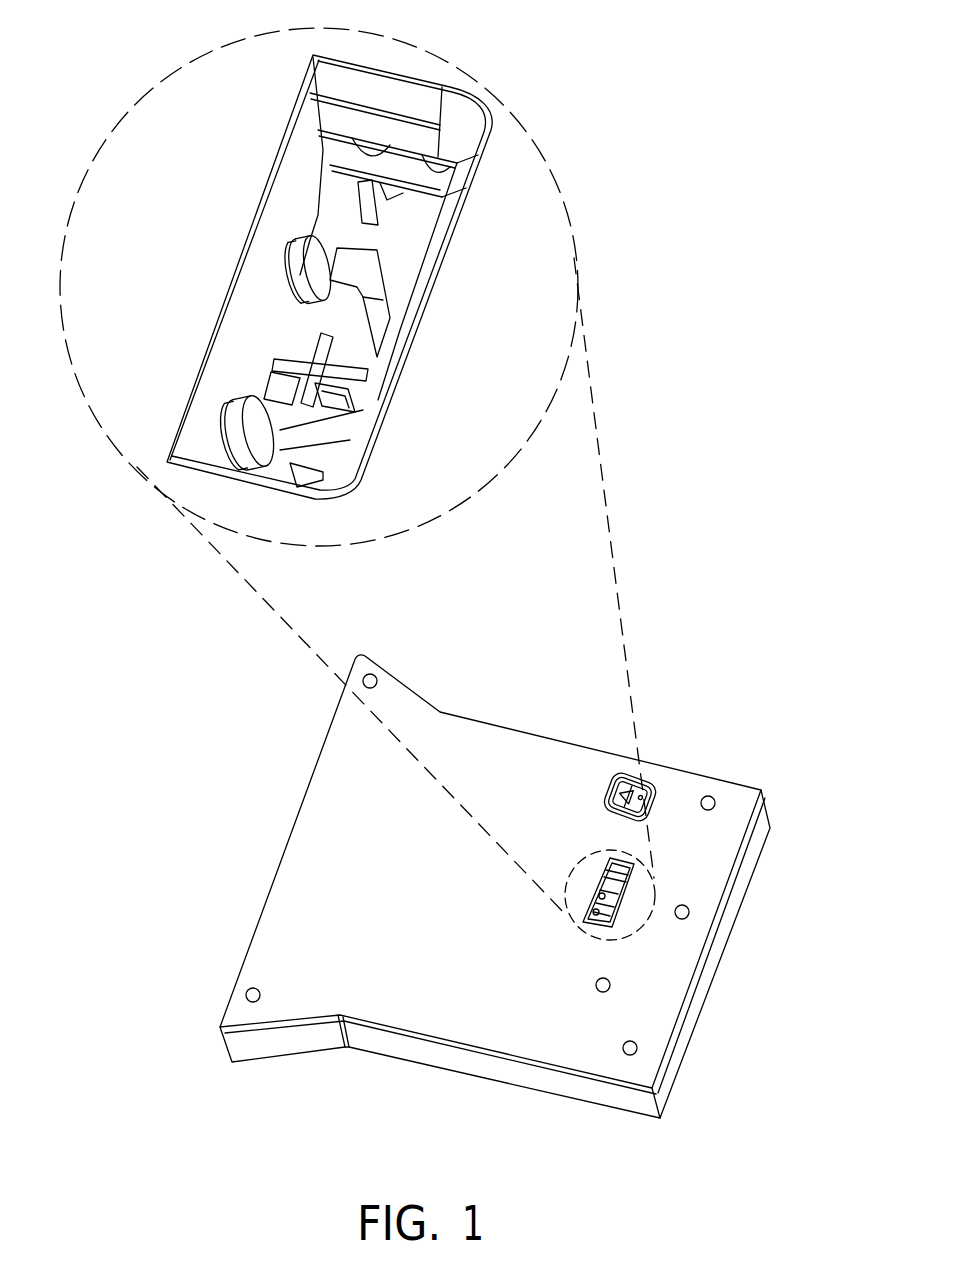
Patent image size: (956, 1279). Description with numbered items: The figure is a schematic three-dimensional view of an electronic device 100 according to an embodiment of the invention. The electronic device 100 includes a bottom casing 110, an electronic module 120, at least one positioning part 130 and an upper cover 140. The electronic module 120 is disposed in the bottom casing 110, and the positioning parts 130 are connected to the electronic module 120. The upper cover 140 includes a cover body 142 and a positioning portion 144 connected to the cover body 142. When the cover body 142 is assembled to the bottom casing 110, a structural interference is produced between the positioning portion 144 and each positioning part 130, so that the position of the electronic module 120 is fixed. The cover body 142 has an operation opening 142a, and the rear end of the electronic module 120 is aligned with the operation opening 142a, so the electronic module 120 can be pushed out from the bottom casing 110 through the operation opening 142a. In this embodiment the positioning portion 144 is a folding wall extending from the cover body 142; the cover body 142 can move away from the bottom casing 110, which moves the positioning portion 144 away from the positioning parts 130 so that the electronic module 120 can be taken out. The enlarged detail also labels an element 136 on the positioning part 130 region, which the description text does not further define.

The electronic device 100 is at (792, 1127).
The bottom casing 110 is at (585, 1092).
The electronic module 120 is at (620, 788).
The positioning part 130 is at (240, 386).
The magnet 136 is at (320, 267).
The upper cover 140 is at (730, 760).
The cover body 142 is at (742, 797).
The operation opening 142a is at (655, 810).
The positioning portion 144 is at (296, 175).